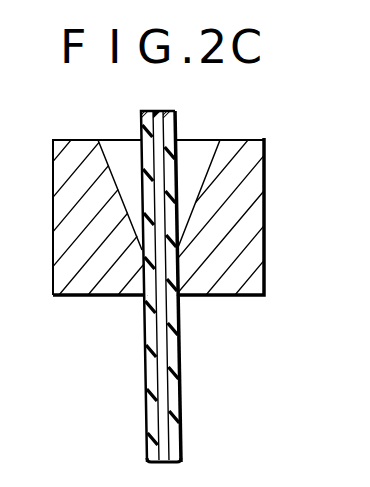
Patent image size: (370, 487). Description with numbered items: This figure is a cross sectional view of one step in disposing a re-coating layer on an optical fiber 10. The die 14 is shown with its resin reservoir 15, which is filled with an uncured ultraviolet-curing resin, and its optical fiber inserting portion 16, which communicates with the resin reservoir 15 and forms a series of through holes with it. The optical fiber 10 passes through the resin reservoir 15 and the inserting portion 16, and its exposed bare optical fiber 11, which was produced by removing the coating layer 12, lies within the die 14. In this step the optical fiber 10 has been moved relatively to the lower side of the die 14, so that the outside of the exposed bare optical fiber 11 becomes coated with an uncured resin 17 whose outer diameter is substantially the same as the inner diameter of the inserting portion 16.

The optical fiber 10 is at (158, 231).
The bare optical fiber 11 is at (162, 372).
The coating layer 12 is at (176, 129).
The die 14 is at (238, 186).
The resin reservoir 15 is at (107, 158).
The optical fiber inserting portion 16 is at (180, 253).
The uncured resin 17 is at (141, 230).